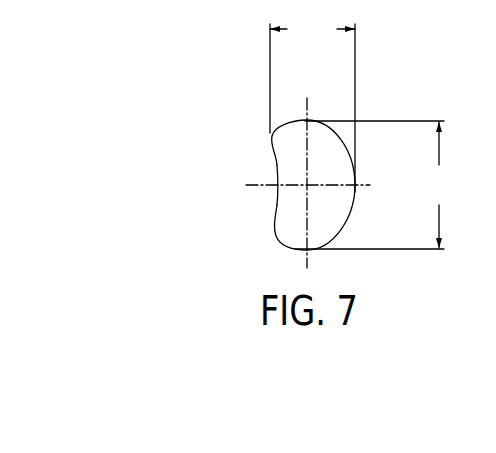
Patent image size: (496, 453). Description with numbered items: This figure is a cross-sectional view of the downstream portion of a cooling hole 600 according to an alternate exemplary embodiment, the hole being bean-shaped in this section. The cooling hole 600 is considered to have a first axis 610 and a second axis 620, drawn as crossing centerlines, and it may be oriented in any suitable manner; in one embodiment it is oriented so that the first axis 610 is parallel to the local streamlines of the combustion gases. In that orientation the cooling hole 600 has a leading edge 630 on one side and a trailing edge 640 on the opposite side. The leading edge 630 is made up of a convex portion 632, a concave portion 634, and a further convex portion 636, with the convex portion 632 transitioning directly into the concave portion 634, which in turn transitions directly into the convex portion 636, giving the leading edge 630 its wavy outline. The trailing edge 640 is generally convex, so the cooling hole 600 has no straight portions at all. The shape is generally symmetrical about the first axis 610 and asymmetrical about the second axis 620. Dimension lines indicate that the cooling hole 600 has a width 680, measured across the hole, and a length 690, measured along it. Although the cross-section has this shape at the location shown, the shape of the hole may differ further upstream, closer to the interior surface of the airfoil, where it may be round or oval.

The cooling hole 600 is at (246, 68).
The first axis 610 is at (248, 185).
The second axis 620 is at (320, 80).
The leading edge 630 is at (263, 210).
The convex portion 632 is at (273, 133).
The concave portion 634 is at (277, 172).
The convex portion 636 is at (273, 236).
The trailing edge 640 is at (358, 149).
The width 680 is at (377, 185).
The length 690 is at (312, 103).